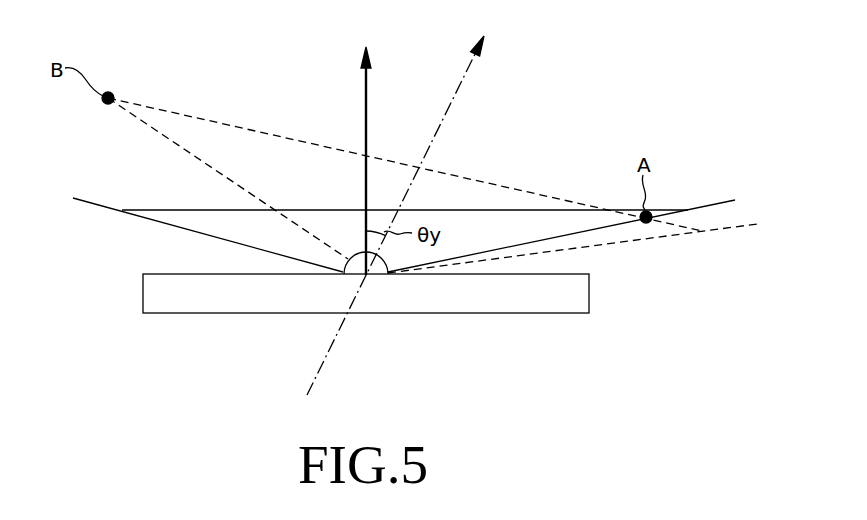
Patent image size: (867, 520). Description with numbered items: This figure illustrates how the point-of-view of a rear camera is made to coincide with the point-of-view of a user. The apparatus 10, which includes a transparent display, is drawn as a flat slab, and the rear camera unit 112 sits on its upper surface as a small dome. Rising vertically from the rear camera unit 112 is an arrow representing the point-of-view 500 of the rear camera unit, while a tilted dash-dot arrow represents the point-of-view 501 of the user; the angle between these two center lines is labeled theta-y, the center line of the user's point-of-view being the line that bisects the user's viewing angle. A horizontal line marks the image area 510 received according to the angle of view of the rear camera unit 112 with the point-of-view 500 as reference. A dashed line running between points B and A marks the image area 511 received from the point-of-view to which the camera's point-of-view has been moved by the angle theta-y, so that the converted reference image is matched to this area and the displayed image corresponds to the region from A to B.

The apparatus 10 is at (583, 295).
The rear camera unit 112 is at (357, 257).
The point-of-view of the rear camera unit 500 is at (366, 102).
The point-of-view of the user 501 is at (468, 72).
The image area according to the angle of view of the rear camera unit 510 is at (536, 209).
The image area from the moved point-of-view 511 is at (222, 122).